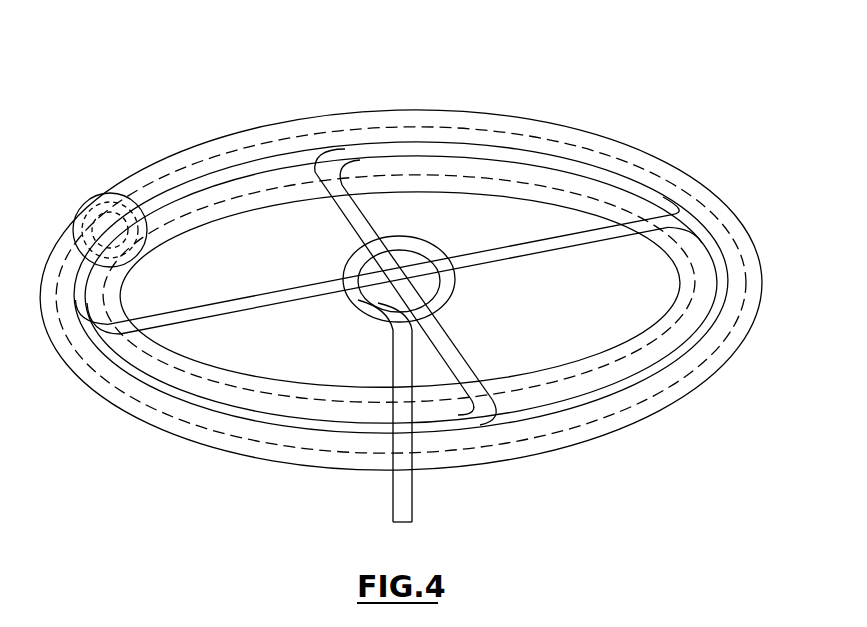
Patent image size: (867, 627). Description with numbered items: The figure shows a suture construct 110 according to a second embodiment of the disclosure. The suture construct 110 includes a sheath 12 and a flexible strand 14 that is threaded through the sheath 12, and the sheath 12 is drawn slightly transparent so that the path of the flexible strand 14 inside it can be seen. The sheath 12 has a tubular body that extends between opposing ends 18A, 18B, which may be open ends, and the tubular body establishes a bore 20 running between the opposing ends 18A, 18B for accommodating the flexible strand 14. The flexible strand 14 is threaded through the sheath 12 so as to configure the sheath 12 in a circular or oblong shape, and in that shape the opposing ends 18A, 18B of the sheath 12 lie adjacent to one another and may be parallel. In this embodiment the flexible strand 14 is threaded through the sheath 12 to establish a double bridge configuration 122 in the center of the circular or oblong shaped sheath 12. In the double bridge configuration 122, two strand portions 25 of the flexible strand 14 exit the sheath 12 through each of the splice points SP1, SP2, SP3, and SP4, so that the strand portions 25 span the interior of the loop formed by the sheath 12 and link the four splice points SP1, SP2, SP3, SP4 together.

The suture construct 110 is at (604, 93).
The sheath 12 is at (722, 350).
The flexible strand 14 is at (612, 390).
The bore 20 is at (220, 158).
The opposing end 18A is at (110, 192).
The opposing end 18B is at (110, 190).
The strand portions 25 is at (360, 218).
The double bridge configuration 122 is at (354, 323).
The splice point SP1 is at (104, 339).
The splice point SP2 is at (500, 409).
The splice point SP3 is at (700, 234).
The splice point SP4 is at (310, 162).